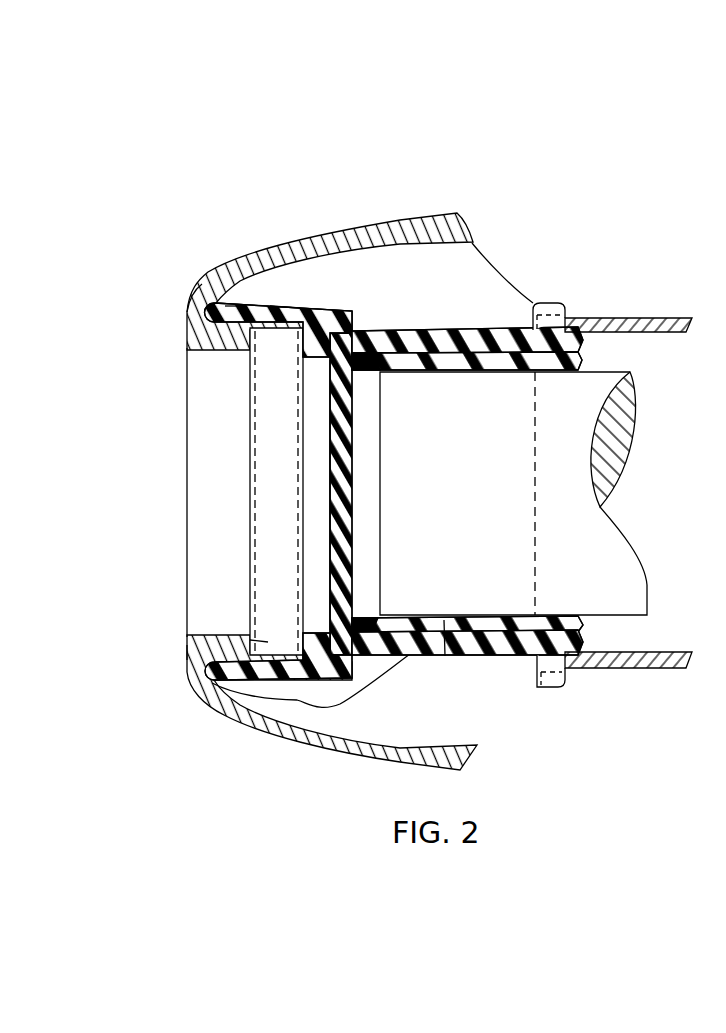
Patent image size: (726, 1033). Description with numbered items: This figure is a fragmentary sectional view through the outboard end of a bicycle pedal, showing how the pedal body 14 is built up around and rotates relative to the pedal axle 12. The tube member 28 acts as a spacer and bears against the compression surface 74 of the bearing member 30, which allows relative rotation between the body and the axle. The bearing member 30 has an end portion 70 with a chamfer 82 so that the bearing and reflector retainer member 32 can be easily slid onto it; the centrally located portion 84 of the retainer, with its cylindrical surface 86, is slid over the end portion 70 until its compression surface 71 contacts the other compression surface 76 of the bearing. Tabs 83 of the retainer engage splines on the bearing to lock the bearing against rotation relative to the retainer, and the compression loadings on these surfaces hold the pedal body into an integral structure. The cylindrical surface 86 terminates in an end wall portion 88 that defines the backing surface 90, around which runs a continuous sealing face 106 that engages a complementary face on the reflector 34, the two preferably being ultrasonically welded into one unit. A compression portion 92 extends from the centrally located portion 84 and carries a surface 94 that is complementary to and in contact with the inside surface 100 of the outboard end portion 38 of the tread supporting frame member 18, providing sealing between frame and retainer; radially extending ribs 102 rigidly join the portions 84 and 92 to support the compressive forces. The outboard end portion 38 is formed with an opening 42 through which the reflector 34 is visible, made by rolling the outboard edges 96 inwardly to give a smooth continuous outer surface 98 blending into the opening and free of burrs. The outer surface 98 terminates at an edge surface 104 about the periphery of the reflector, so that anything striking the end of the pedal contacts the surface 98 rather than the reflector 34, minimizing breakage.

The pedal axle 12 is at (598, 547).
The pedal body 14 is at (302, 187).
The tread supporting frame member 18 is at (323, 469).
The tube member 28 is at (633, 318).
The bearing member 30 is at (558, 688).
The bearing and reflector retainer member 32 is at (508, 656).
The reflector 34 is at (155, 490).
The outboard end portion 38 is at (388, 234).
The opening 42 is at (252, 343).
The end portion 70 is at (465, 330).
The compression surface 71 is at (551, 684).
The compression surface 74 is at (578, 334).
The compression surface 76 is at (562, 281).
The chamfer 82 is at (267, 697).
The tabs 83 is at (550, 302).
The centrally located portion 84 is at (475, 627).
The cylindrical surface 86 is at (445, 617).
The end wall portion 88 is at (337, 480).
The backing surface 90 is at (330, 433).
The compression portion 92 is at (290, 306).
The surface 94 is at (186, 312).
The outboard edges 96 is at (197, 343).
The outer surface 98 is at (187, 657).
The inside surface 100 is at (238, 300).
The radially extending ribs 102 is at (445, 272).
The edge surface 104 is at (268, 642).
The sealing face 106 is at (300, 352).